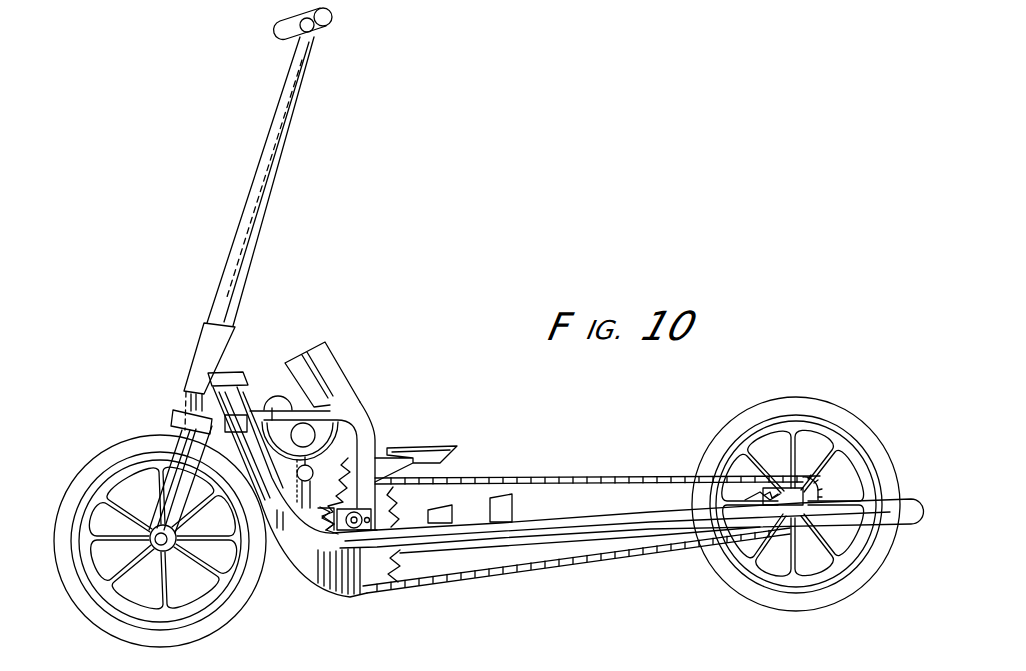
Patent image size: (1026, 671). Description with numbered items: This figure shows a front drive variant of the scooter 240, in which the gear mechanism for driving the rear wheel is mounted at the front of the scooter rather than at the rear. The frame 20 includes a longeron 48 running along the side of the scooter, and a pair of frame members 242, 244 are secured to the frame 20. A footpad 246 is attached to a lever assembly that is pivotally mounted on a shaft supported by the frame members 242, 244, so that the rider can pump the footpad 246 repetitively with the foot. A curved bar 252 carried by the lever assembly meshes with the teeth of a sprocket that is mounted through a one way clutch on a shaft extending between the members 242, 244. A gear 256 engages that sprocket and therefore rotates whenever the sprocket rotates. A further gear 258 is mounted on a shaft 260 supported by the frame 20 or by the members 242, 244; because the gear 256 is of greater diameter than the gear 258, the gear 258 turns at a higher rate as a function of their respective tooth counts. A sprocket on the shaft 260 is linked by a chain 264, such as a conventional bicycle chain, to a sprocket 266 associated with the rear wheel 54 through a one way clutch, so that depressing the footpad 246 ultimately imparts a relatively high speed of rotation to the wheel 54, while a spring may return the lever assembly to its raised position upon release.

The frame 20 is at (554, 540).
The longeron 48 is at (480, 530).
The wheel 54 is at (855, 587).
The front drive variant 240 is at (678, 647).
The frame member 242 is at (293, 357).
The frame member 244 is at (337, 356).
The footpad 246 is at (453, 442).
The curved bar 252 is at (327, 442).
The gear 256 is at (332, 467).
The gear 258 is at (330, 523).
The shaft 260 is at (360, 533).
The chain 264 is at (593, 480).
The sprocket 266 is at (812, 482).